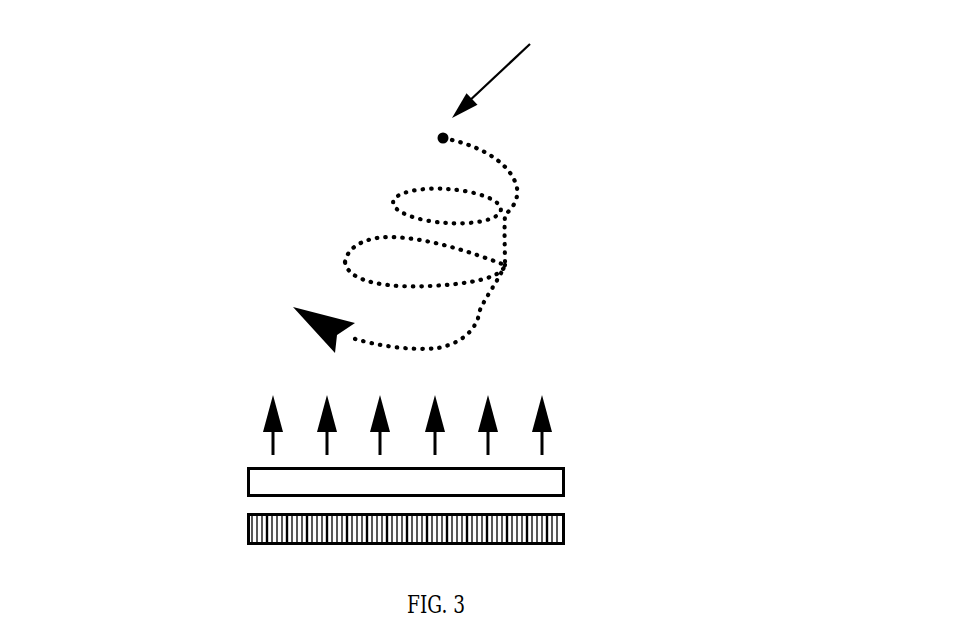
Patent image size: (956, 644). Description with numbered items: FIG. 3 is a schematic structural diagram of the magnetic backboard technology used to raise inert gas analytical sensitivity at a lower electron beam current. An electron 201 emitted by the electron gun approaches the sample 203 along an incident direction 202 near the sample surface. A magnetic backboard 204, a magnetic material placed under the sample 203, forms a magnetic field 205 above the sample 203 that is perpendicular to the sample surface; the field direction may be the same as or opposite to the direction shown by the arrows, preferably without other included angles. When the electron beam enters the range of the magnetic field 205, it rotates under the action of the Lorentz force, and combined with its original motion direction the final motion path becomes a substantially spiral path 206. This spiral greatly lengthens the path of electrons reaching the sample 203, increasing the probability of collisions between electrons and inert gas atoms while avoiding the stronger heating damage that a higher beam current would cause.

The electron 201 is at (405, 139).
The incident direction of electrons 202 is at (530, 77).
The sample 203 is at (245, 480).
The magnetic backboard 204 is at (247, 530).
The magnetic field 205 is at (253, 395).
The spiral motion path 206 is at (502, 232).